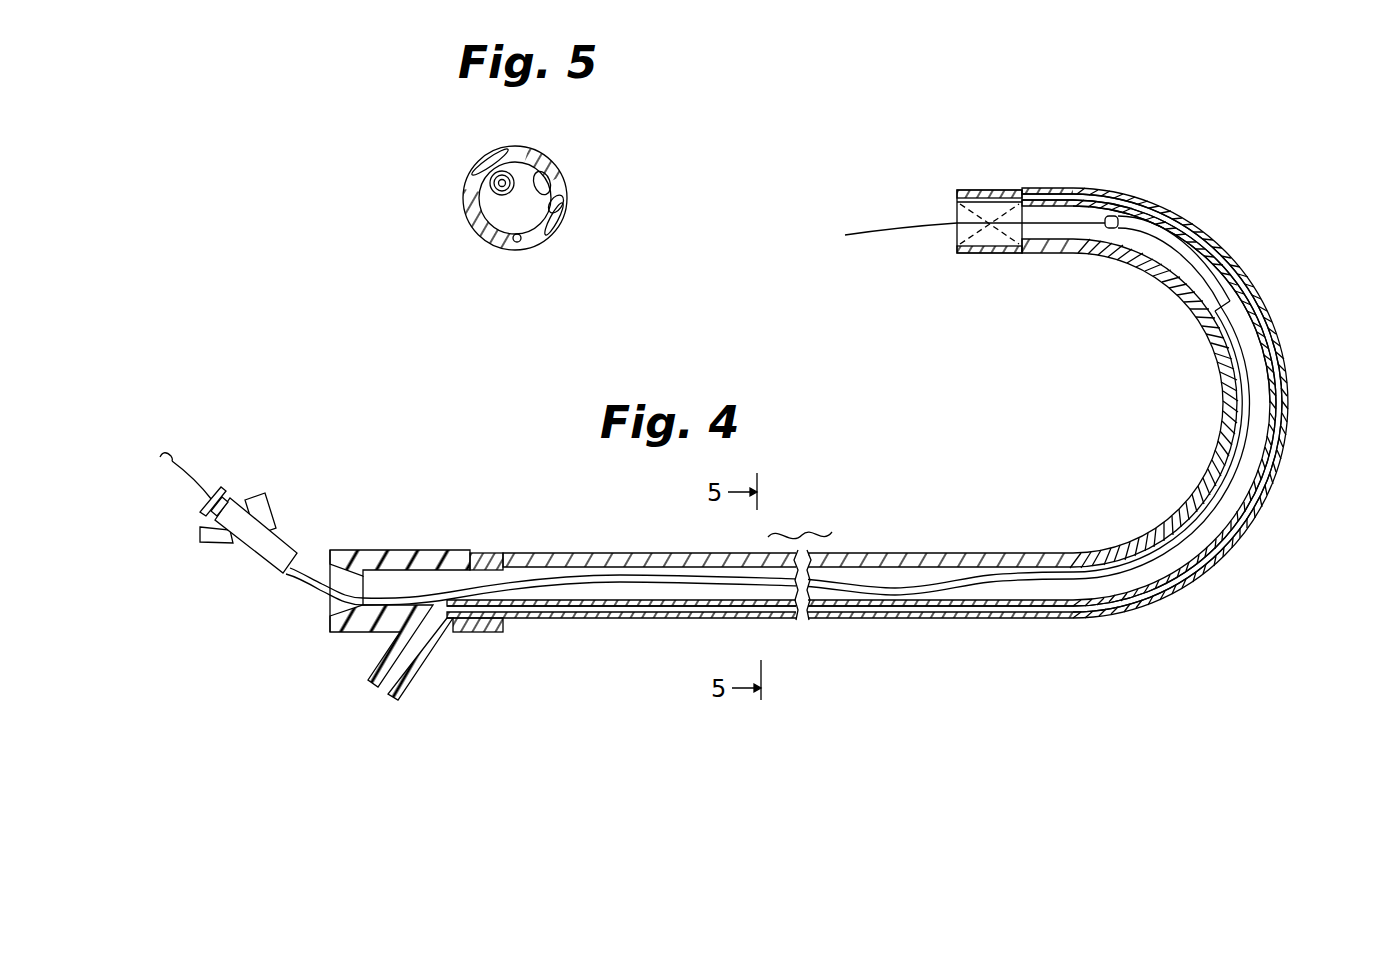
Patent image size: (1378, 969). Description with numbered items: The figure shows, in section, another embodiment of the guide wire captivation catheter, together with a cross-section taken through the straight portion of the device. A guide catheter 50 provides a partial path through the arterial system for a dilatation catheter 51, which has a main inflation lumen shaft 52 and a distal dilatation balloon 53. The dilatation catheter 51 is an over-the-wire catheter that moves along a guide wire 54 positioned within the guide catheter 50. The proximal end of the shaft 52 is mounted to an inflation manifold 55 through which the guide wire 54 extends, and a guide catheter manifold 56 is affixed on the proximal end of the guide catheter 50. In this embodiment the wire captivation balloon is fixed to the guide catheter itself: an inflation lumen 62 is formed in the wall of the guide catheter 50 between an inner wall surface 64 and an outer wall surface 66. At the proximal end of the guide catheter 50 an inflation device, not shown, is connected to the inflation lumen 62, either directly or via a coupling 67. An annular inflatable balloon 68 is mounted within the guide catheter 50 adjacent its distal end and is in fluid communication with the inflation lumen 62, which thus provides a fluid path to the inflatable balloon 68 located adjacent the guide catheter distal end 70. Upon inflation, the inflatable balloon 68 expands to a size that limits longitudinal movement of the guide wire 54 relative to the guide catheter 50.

In FIG. 5, the guide catheter 50 is at (548, 152).
In FIG. 4, the guide catheter 50 is at (598, 553).
In FIG. 4, the dilatation catheter 51 is at (1246, 367).
In FIG. 5, the main inflation lumen shaft 52 is at (511, 172).
In FIG. 4, the main inflation lumen shaft 52 is at (1030, 580).
In FIG. 4, the distal dilatation balloon 53 is at (1158, 236).
In FIG. 5, the guide wire 54 is at (494, 188).
In FIG. 4, the guide wire 54 is at (895, 240).
In FIG. 4, the inflation manifold 55 is at (262, 553).
In FIG. 4, the guide catheter manifold 56 is at (380, 551).
In FIG. 5, the inflation lumen 62 is at (522, 240).
In FIG. 4, the inflation lumen 62 is at (528, 619).
In FIG. 5, the inner wall surface 64 is at (566, 193).
In FIG. 4, the inner wall surface 64 is at (580, 600).
In FIG. 5, the outer wall surface 66 is at (562, 177).
In FIG. 4, the outer wall surface 66 is at (483, 553).
In FIG. 4, the coupling 67 is at (422, 677).
In FIG. 4, the annular inflatable balloon 68 is at (995, 210).
In FIG. 4, the guide catheter distal end 70 is at (965, 192).